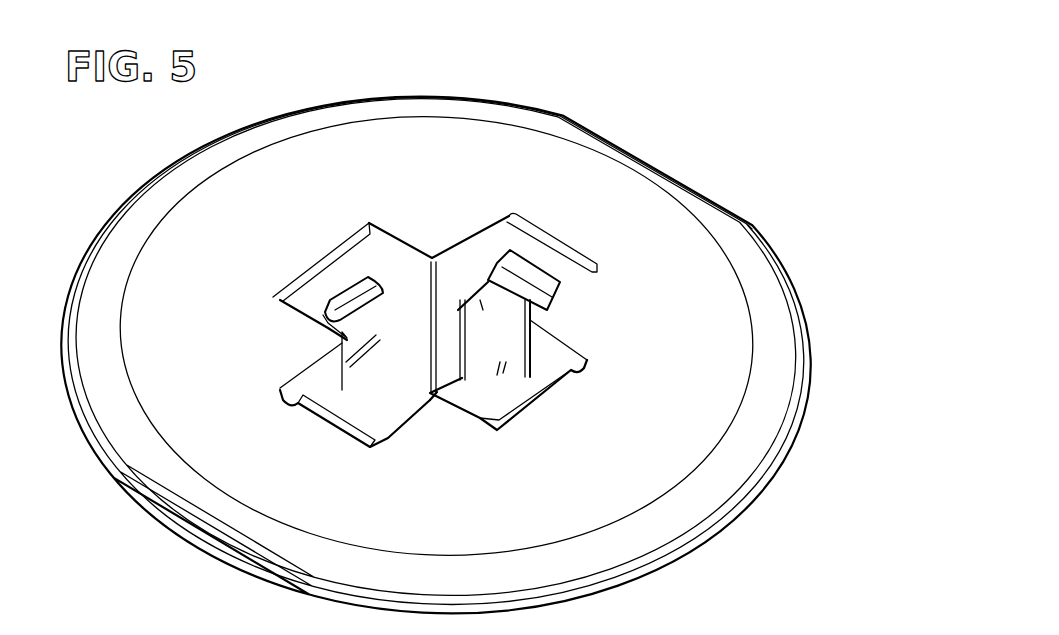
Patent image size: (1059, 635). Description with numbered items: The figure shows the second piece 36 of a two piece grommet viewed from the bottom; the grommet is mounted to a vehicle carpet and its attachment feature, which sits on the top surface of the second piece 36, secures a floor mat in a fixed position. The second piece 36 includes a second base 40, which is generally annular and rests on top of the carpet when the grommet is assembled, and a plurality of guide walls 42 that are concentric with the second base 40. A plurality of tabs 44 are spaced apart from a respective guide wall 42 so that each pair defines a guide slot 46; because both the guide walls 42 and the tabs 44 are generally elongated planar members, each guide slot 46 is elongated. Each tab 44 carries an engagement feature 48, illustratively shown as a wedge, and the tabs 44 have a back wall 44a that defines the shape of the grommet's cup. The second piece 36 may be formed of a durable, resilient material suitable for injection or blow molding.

The second piece 36 is at (335, 72).
The second base 40 is at (712, 493).
The guide walls 42 is at (328, 282).
The tabs 44 is at (330, 306).
The back wall 44a is at (367, 332).
The guide slot 46 is at (515, 250).
The engagement feature 48 is at (333, 307).